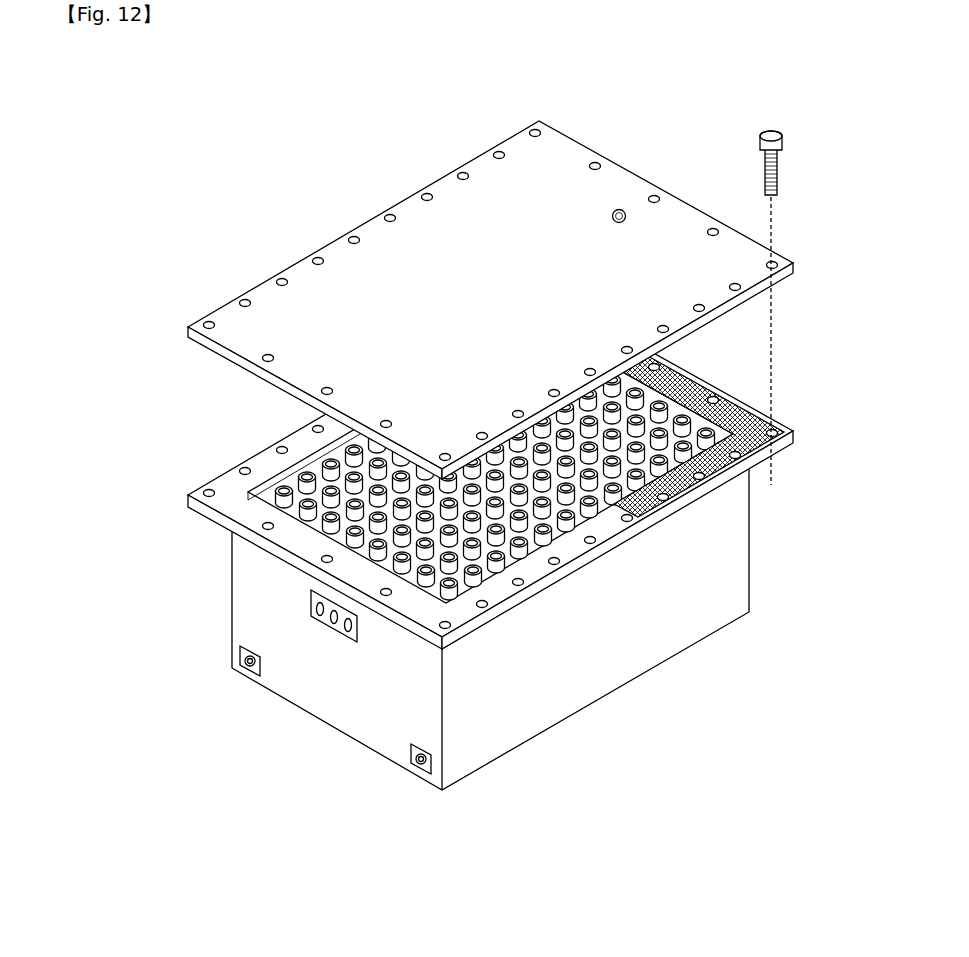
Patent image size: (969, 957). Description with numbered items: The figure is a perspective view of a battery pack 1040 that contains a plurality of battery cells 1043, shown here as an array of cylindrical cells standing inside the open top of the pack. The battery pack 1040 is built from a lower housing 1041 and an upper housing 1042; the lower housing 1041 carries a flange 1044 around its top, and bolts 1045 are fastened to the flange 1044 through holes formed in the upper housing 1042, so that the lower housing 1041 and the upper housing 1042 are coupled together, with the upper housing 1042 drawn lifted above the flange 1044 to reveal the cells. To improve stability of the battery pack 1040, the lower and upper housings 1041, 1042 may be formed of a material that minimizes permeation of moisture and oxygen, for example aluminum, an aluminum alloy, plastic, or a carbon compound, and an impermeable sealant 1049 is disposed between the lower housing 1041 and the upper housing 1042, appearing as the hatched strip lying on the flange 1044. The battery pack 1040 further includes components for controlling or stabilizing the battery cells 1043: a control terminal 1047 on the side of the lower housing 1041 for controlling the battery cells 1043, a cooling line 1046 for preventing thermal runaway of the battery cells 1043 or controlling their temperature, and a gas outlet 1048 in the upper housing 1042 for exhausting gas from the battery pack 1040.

The battery pack 1040 is at (311, 195).
The lower housing 1041 is at (640, 634).
The upper housing 1042 is at (546, 256).
The battery cells 1043 is at (292, 470).
The flange 1044 is at (217, 477).
The bolts 1045 is at (775, 131).
The cooling line 1046 is at (412, 764).
The control terminal 1047 is at (320, 624).
The gas outlet 1048 is at (619, 209).
The impermeable sealant 1049 is at (778, 422).